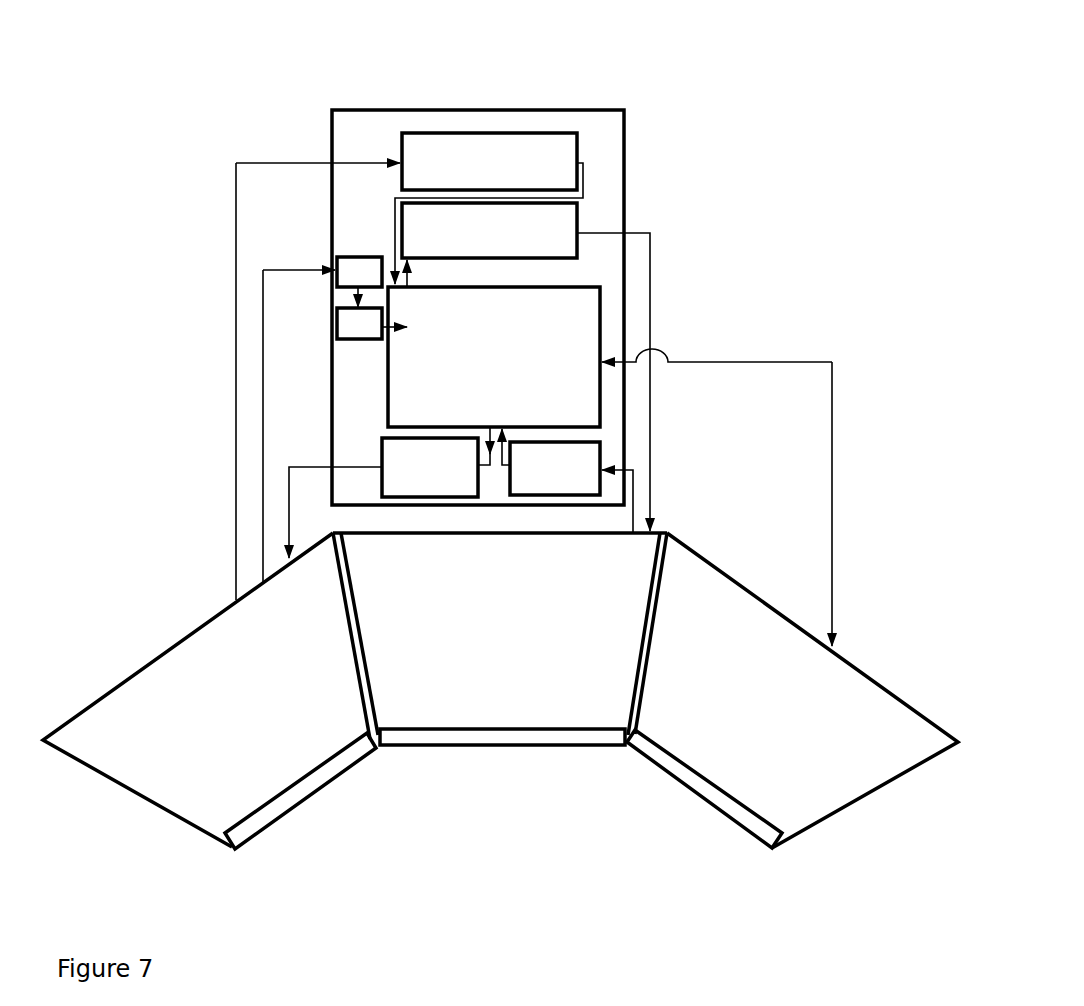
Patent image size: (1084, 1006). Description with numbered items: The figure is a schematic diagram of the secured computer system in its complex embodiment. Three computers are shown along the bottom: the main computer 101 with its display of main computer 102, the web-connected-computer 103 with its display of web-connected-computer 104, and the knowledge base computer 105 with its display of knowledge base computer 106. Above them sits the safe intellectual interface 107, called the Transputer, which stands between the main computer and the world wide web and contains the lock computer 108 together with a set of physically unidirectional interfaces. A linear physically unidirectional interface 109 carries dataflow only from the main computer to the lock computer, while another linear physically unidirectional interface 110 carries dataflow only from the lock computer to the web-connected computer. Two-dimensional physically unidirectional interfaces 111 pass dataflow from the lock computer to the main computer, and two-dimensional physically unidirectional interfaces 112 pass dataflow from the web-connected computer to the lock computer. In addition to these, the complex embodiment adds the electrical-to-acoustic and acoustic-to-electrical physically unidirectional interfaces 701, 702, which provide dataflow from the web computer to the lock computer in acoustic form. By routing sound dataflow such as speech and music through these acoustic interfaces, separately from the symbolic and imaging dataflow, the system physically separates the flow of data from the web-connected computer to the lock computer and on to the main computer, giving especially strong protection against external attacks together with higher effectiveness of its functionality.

The main computer 101 is at (488, 698).
The display of main computer 102 is at (565, 743).
The web-connected-computer 103 is at (290, 762).
The display of web-connected-computer 104 is at (250, 830).
The knowledge base computer 105 is at (722, 752).
The display of knowledge base computer 106 is at (743, 818).
The safe intellectual interface 107 is at (600, 121).
The lock computer 108 is at (398, 398).
The linear physically unidirectional interface 109 is at (597, 453).
The linear physically unidirectional interface 110 is at (398, 454).
The two-dimensional physically unidirectional interfaces 111 is at (406, 216).
The two-dimensional physically unidirectional interfaces 112 is at (430, 151).
The electrical-to-acoustic physically unidirectional interface 701 is at (348, 280).
The acoustic-to-electrical physically unidirectional interface 702 is at (345, 318).